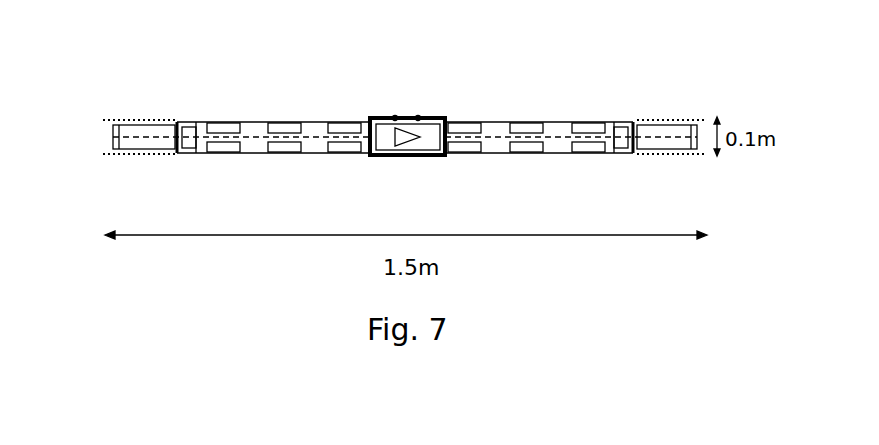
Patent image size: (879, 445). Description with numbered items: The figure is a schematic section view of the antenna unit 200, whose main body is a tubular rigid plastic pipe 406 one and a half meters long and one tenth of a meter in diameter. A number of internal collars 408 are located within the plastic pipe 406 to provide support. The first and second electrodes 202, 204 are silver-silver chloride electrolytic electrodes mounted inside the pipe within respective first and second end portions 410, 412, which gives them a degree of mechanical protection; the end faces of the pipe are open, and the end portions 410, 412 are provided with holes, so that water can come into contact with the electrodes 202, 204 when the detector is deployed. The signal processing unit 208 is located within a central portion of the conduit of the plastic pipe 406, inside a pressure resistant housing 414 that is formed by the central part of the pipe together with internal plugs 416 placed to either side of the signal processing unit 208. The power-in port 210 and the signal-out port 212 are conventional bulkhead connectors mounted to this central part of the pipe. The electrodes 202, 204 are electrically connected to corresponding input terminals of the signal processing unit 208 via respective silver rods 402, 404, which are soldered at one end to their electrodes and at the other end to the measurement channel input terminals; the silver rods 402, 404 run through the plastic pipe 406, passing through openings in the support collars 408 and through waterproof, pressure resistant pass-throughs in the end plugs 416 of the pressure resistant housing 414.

The antenna unit 200 is at (632, 93).
The first electrode 202 is at (142, 125).
The second electrode 204 is at (676, 128).
The signal processing unit 208 is at (422, 140).
The power-in port 210 is at (395, 118).
The signal-out port 212 is at (418, 118).
The first silver rod 402 is at (258, 140).
The second silver rod 404 is at (553, 138).
The rigid plastic pipe 406 is at (200, 155).
The internal collars 408 is at (219, 127).
The first end portion 410 is at (113, 157).
The second end portion 412 is at (663, 157).
The pressure resistant housing 414 is at (387, 157).
The internal plugs 416 is at (452, 128).